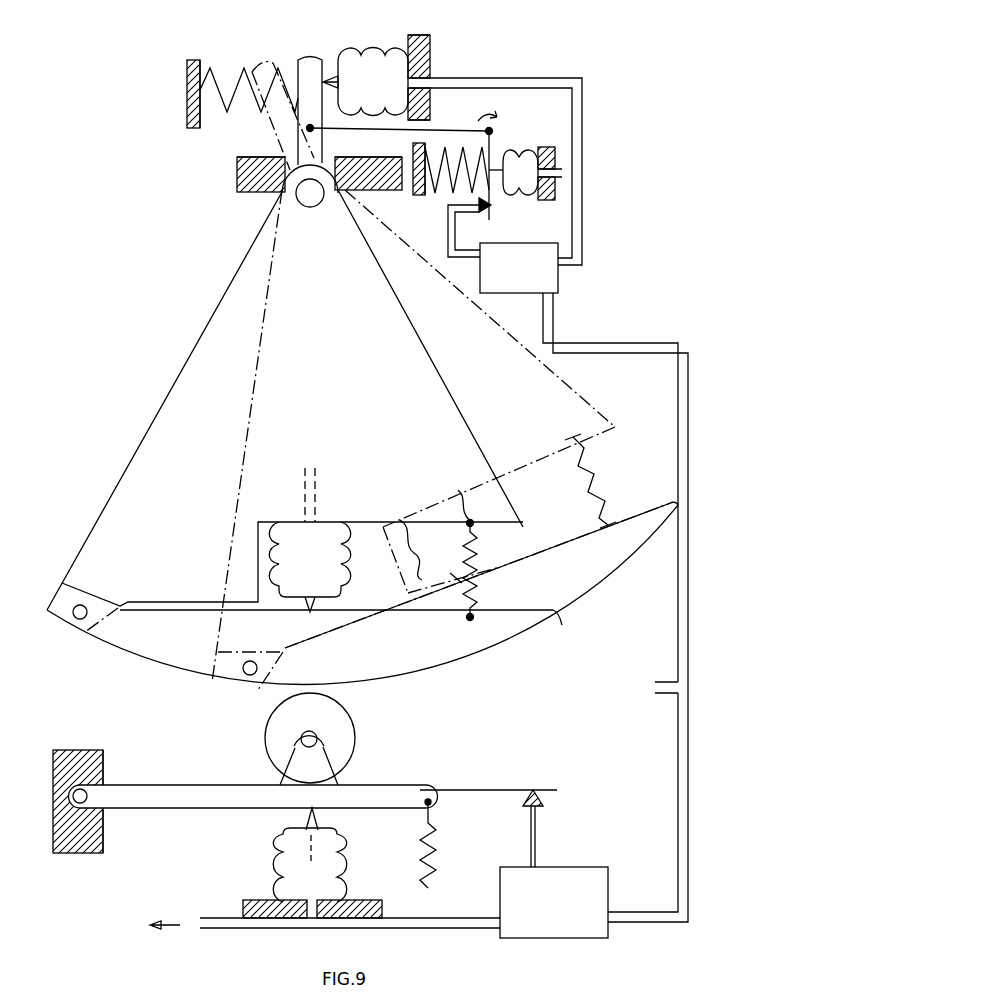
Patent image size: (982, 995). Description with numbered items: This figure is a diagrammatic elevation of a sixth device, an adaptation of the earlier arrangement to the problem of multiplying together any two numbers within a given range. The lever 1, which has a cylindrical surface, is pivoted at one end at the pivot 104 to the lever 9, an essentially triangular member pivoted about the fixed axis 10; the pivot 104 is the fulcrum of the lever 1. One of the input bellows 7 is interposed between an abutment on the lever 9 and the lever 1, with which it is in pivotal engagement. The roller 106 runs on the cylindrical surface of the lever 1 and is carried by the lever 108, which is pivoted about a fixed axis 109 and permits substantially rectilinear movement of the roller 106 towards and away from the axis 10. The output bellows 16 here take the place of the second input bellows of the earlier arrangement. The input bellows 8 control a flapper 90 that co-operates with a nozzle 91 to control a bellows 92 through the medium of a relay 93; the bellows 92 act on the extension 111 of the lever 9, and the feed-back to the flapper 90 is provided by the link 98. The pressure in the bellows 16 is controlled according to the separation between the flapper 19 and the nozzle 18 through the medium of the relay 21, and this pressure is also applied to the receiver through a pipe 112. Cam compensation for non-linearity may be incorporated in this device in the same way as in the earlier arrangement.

The lever 1 is at (160, 655).
The input bellows 7 is at (332, 560).
The input bellows 8 is at (518, 150).
The lever 9 is at (210, 330).
The fixed axis 10 is at (303, 195).
The output bellows 16 is at (293, 845).
The nozzle 18 is at (545, 800).
The flapper 19 is at (458, 788).
The relay 21 is at (575, 878).
The flapper 90 is at (491, 194).
The nozzle 91 is at (469, 227).
The bellows 92 is at (365, 68).
The relay 93 is at (483, 283).
The link 98 is at (393, 129).
The pivot 104 is at (75, 620).
The roller 106 is at (352, 733).
The lever 108 is at (203, 795).
The fixed axis 109 is at (87, 794).
The extension 111 is at (308, 62).
The pipe 112 is at (275, 928).